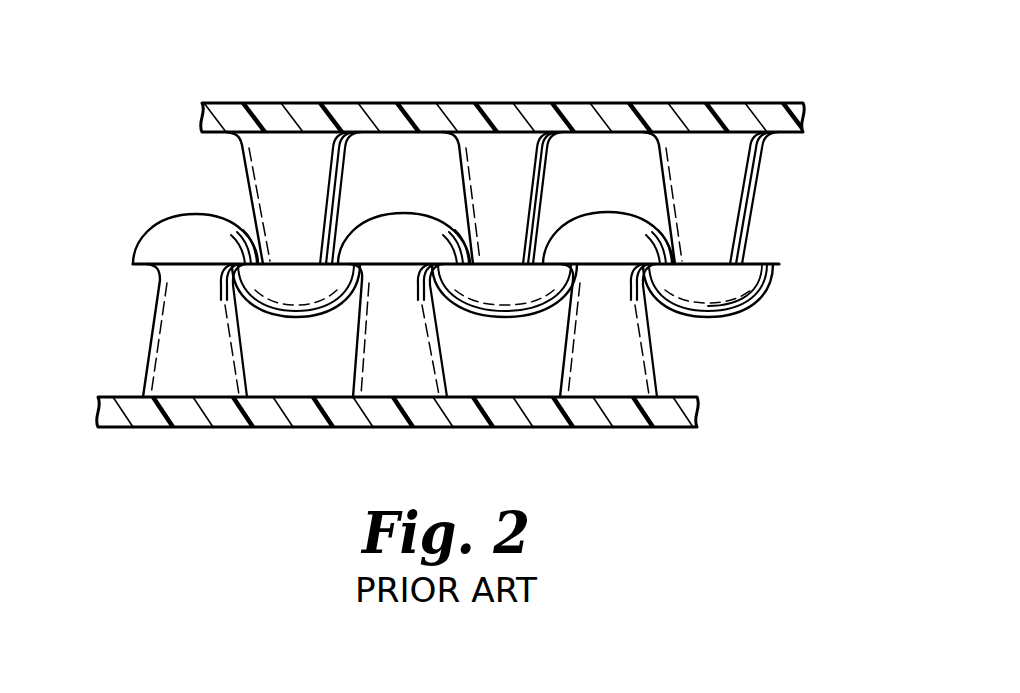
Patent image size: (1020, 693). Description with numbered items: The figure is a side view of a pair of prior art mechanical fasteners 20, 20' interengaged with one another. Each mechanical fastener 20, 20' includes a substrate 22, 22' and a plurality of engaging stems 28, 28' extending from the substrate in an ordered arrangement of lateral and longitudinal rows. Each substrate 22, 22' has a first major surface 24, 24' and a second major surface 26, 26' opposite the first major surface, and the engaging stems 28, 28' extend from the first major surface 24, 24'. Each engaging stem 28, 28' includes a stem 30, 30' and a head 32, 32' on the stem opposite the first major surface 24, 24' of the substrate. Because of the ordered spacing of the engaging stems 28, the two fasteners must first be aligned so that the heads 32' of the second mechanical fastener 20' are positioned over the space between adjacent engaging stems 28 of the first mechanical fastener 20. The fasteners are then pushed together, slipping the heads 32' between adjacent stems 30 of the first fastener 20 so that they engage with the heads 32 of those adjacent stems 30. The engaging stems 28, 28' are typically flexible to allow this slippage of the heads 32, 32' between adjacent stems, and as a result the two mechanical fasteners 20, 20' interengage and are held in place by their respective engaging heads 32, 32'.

The mechanical fastener 20 is at (468, 384).
The mechanical fastener 20' is at (473, 144).
The substrate 22 is at (398, 449).
The substrate 22' is at (503, 80).
The first major surface 24 is at (300, 330).
The first major surface 24' is at (404, 200).
The second major surface 26 is at (403, 448).
The second major surface 26' is at (504, 80).
The engaging stem 28 is at (155, 212).
The engaging stem 28' is at (741, 330).
The stem 30 is at (160, 330).
The stem 30' is at (744, 198).
The head 32 is at (608, 203).
The head 32' is at (647, 325).